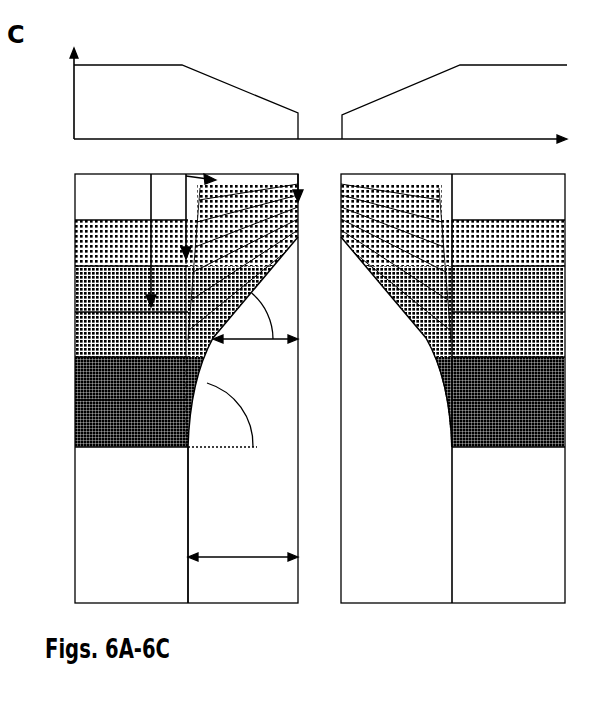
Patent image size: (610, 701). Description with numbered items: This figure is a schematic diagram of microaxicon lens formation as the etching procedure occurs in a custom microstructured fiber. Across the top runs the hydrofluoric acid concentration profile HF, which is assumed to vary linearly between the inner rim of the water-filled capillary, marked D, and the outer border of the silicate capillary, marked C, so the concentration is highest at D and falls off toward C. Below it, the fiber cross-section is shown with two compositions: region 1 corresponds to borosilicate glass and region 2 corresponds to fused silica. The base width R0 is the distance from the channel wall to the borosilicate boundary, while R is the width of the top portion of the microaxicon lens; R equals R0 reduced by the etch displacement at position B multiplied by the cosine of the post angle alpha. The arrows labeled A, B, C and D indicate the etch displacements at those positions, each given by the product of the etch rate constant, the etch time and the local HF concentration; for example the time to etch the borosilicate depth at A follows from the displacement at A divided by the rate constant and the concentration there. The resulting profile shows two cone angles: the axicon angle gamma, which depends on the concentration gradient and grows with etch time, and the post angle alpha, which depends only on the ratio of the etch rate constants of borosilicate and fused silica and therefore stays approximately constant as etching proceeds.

The HF concentration profile HF is at (298, 95).
The etch position A is at (145, 240).
The etch position B is at (201, 169).
The outer border of the silicate capillary C is at (179, 216).
The inner rim of the water-filled capillary D is at (297, 178).
The width of the top portion of the microaxicon lens R is at (255, 350).
The base width R0 is at (243, 546).
The borosilicate composition 1 is at (170, 525).
The fused-silica composition 2 is at (238, 464).
The post angle alpha is at (230, 415).
The axicon angle gamma is at (258, 316).